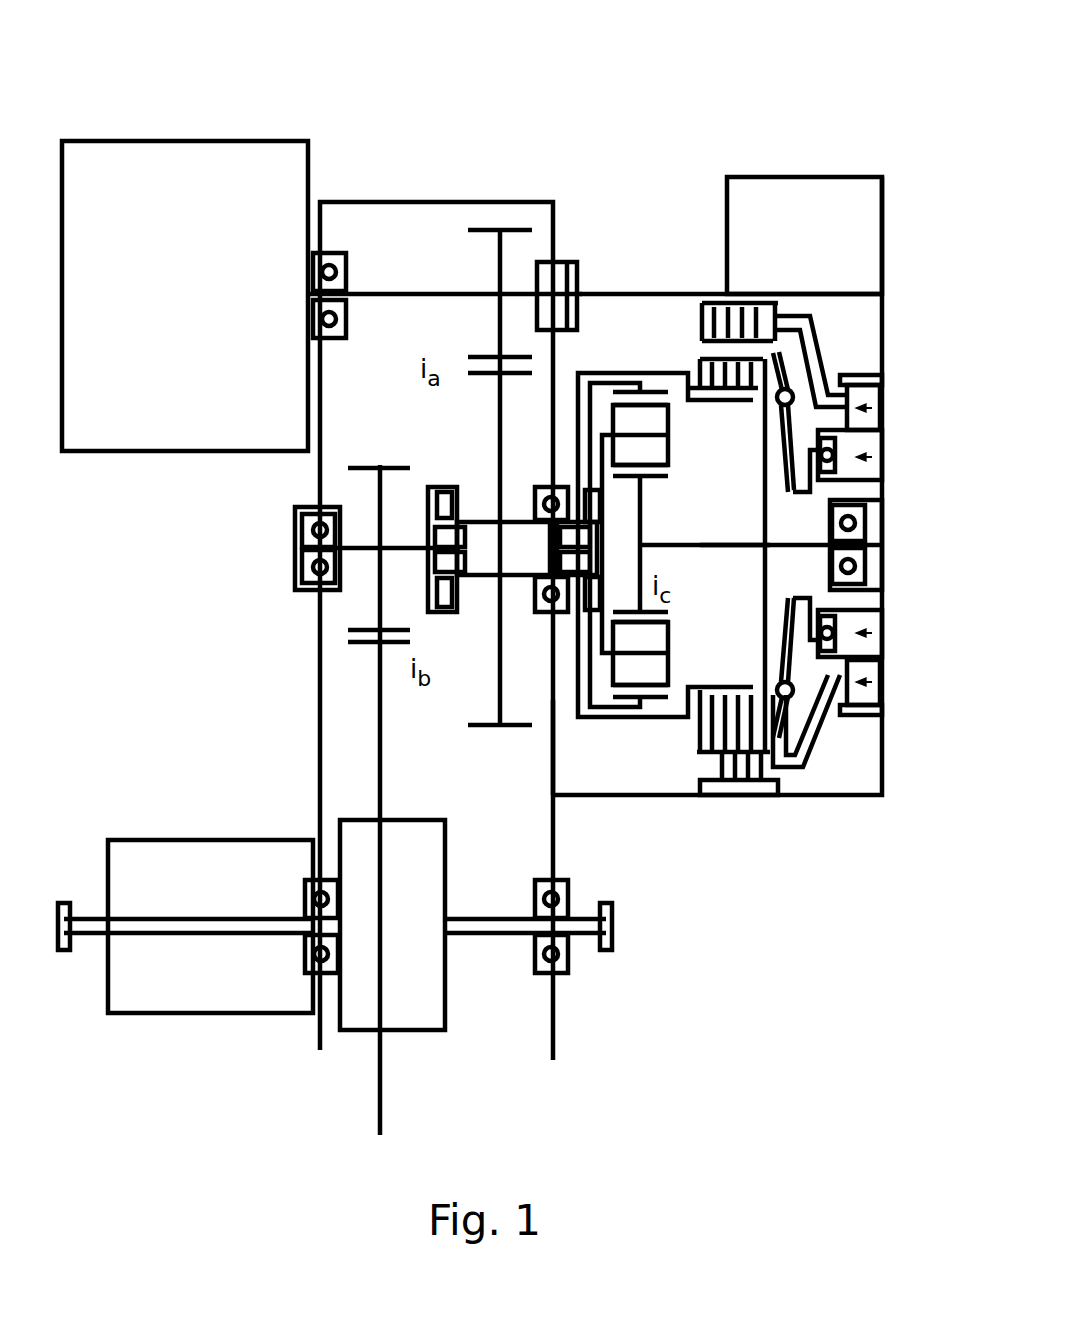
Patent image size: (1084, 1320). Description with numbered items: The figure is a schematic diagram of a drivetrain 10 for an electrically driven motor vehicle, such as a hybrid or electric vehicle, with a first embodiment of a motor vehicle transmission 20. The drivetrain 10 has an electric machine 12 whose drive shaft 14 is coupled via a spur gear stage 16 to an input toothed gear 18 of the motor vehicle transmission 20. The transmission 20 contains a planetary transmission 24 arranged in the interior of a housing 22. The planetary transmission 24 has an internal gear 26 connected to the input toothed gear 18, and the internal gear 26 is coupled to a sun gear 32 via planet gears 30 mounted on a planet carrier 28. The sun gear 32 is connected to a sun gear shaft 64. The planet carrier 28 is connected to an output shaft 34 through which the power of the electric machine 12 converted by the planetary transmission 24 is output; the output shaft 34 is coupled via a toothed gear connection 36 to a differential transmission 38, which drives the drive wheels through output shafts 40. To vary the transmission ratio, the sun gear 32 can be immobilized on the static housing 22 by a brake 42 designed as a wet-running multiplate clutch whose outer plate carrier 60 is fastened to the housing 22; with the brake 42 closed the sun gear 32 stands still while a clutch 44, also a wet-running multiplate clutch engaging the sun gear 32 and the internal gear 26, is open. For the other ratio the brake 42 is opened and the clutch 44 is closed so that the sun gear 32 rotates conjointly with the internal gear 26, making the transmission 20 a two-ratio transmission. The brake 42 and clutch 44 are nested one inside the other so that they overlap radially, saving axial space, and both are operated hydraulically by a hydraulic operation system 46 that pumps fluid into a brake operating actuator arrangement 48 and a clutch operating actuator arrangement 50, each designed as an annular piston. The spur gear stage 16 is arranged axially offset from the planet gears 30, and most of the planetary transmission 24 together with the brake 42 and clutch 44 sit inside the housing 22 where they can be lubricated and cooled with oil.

The drivetrain 10 is at (773, 68).
The electric machine 12 is at (203, 139).
The drive shaft 14 is at (355, 287).
The spur gear stage 16 is at (467, 315).
The input toothed gear 18 is at (500, 410).
The motor vehicle transmission 20 is at (714, 880).
The housing 22 is at (880, 310).
The planetary transmission 24 is at (594, 754).
The internal gear 26 is at (665, 347).
The planet carrier 28 is at (597, 437).
The planet gears 30 is at (622, 392).
The sun gear 32 is at (642, 528).
The output shaft 34 is at (403, 548).
The toothed gear connection 36 is at (338, 654).
The differential transmission 38 is at (370, 973).
The output shafts 40 is at (86, 926).
The brake 42 is at (755, 766).
The clutch 44 is at (750, 727).
The hydraulic operation system 46 is at (840, 233).
The brake operating actuator arrangement 48 is at (857, 397).
The clutch operating actuator arrangement 50 is at (853, 449).
The outer plate carrier 60 is at (729, 787).
The sun gear shaft 64 is at (735, 543).